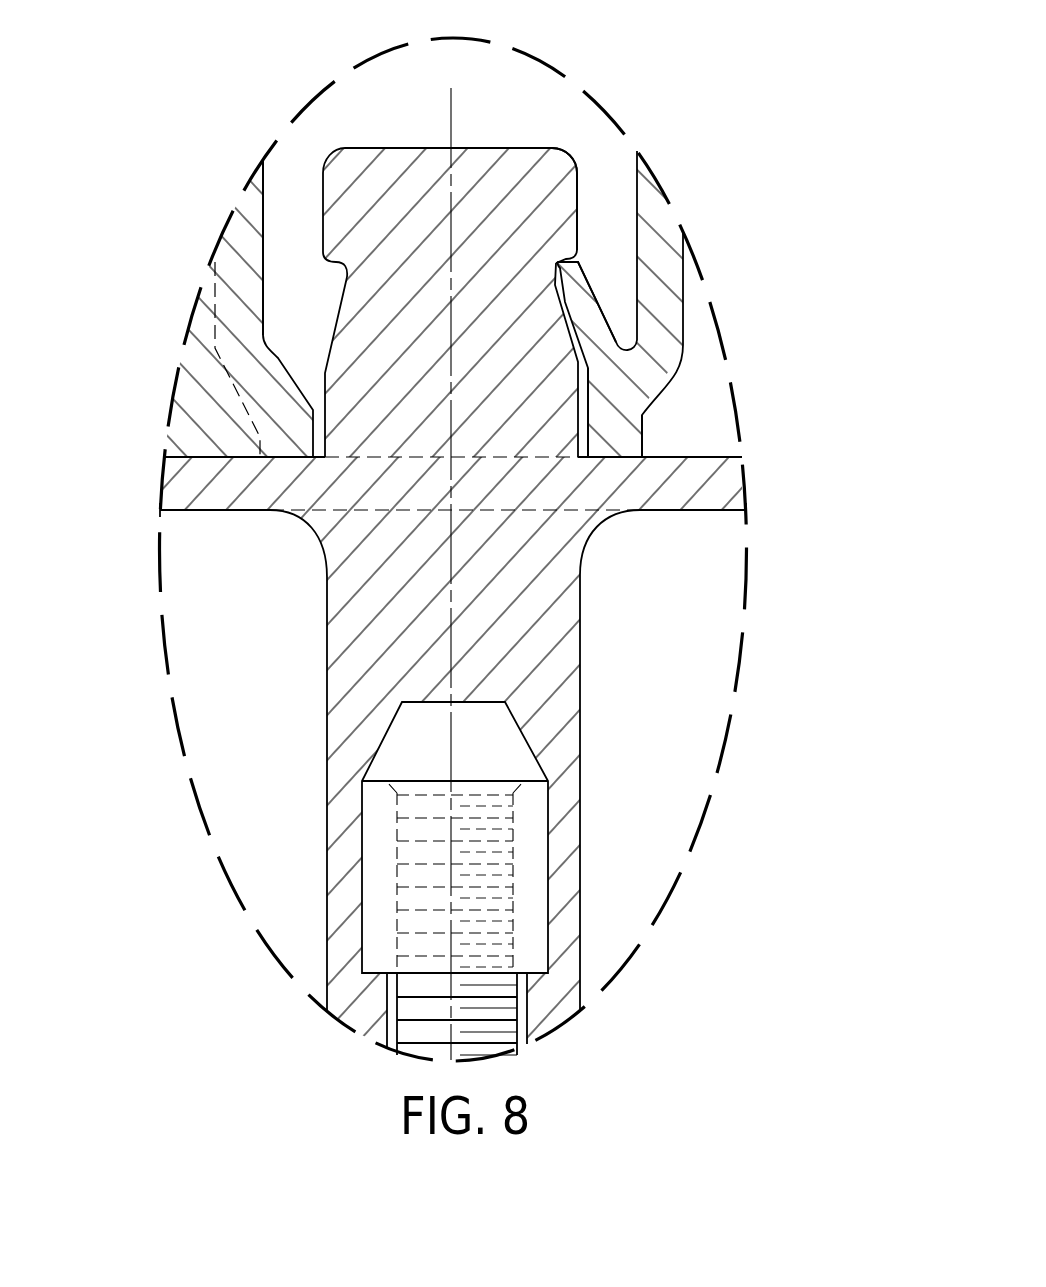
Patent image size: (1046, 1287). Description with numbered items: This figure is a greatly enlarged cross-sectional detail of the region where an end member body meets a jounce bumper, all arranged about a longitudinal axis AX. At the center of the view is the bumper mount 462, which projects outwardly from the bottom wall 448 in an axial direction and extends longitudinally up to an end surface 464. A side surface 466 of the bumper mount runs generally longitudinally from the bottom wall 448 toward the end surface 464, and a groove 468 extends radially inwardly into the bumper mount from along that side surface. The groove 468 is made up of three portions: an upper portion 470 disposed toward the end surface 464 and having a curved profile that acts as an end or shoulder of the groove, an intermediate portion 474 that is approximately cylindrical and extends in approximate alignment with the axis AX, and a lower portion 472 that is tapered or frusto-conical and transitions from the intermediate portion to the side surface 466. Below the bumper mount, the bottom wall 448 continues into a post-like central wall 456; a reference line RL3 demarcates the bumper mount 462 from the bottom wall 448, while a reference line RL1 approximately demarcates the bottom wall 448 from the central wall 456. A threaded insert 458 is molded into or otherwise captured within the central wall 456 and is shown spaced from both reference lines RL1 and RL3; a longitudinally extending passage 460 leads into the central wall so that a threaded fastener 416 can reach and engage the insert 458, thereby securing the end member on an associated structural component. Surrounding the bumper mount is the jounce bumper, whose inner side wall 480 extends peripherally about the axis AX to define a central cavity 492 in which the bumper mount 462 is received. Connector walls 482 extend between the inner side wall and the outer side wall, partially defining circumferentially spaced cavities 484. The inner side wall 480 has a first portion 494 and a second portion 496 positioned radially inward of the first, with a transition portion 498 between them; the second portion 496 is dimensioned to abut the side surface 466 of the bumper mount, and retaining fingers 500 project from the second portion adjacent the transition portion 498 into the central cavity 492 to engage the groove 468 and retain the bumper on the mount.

The central cavity 492 is at (540, 84).
The longitudinal axis AX is at (451, 124).
The end surface 464 is at (405, 147).
The intermediate portion 474 is at (347, 273).
The lower portion 472 is at (333, 338).
The bumper mount 462 is at (566, 140).
The upper portion 470 is at (567, 253).
The groove 468 is at (298, 282).
The side surface 466 is at (323, 193).
The inner side wall 480 is at (250, 198).
The connector walls 482 is at (200, 323).
The first portion 494 is at (660, 220).
The retaining fingers 500 is at (583, 308).
The cavities 484 is at (695, 335).
The transition portion 498 is at (642, 375).
The second portion 496 is at (622, 438).
The bottom wall 448 is at (162, 537).
The reference line RL1 is at (313, 533).
The reference line RL3 is at (540, 462).
The central wall 456 is at (347, 670).
The threaded insert 458 is at (535, 808).
The passage 460 is at (397, 998).
The threaded fastener 416 is at (507, 1030).